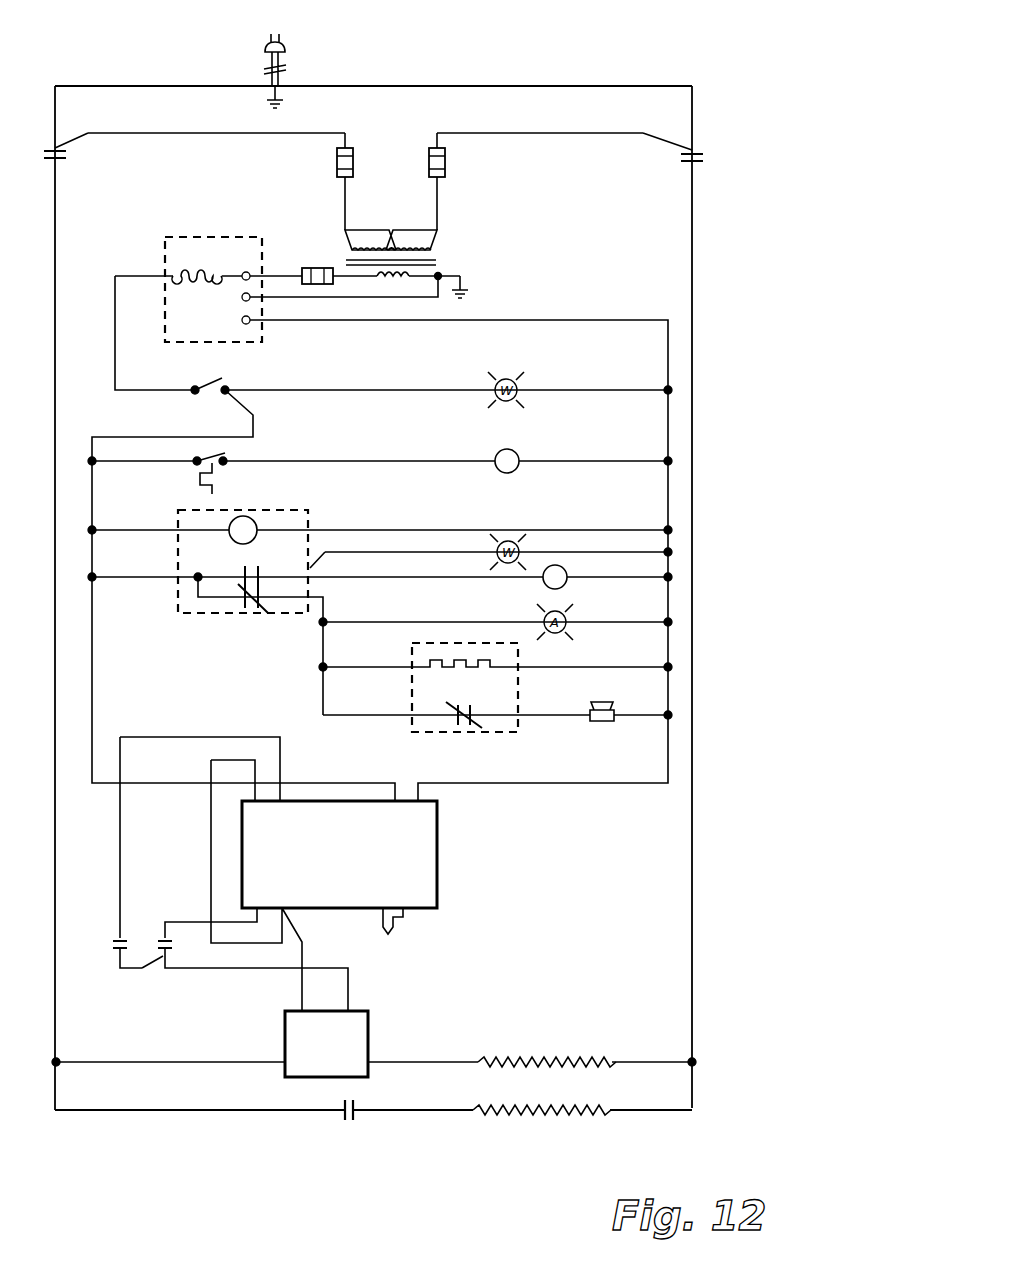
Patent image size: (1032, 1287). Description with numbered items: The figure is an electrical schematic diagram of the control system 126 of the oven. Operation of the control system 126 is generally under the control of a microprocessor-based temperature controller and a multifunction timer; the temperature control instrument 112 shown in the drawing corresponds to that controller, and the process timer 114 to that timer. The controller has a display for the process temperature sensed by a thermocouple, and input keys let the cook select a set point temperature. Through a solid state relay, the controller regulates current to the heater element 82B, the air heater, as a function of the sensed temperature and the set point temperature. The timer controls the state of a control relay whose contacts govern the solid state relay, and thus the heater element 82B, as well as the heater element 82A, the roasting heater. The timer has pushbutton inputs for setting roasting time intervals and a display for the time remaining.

The control system 126 is at (755, 332).
The process timer 114 is at (222, 616).
The temperature control instrument 112 is at (437, 851).
The heater element 82B is at (536, 1058).
The heater element 82A is at (546, 1110).